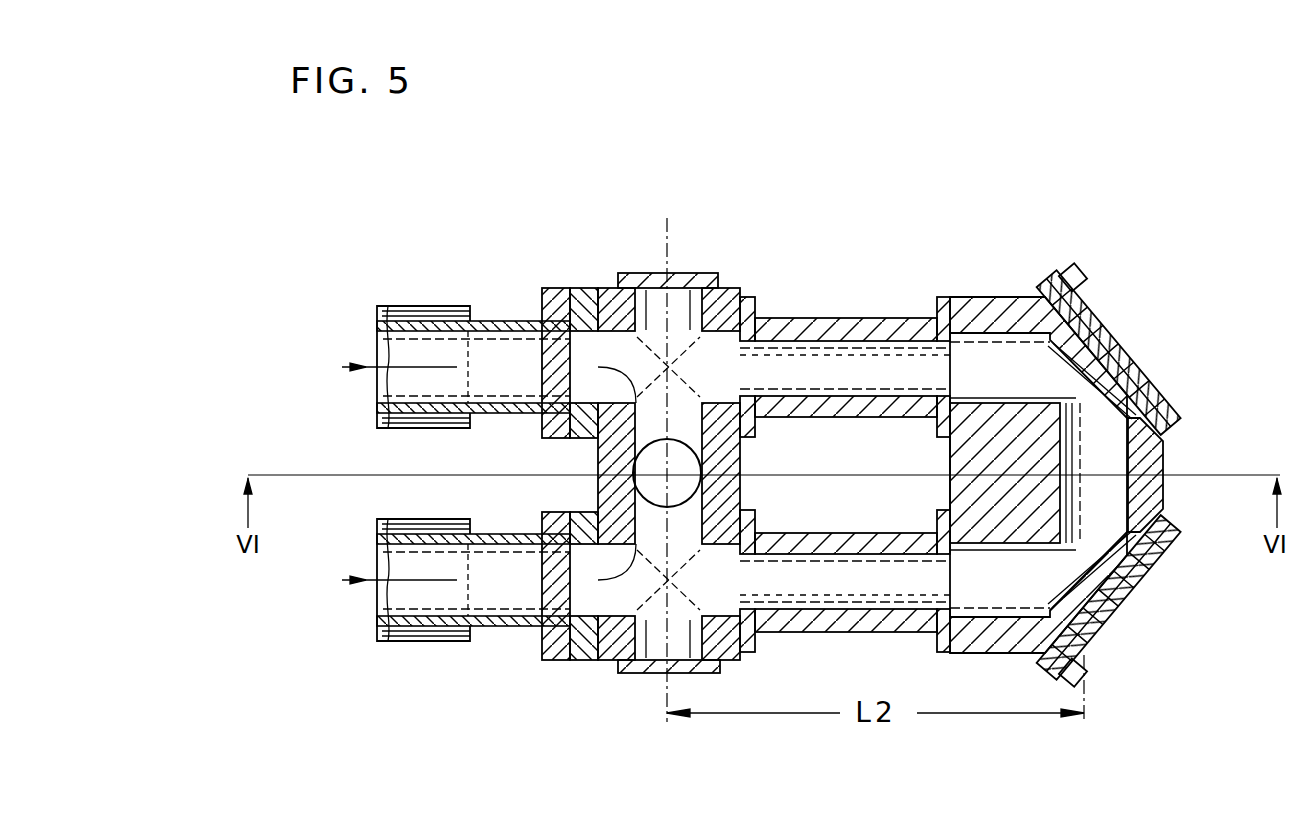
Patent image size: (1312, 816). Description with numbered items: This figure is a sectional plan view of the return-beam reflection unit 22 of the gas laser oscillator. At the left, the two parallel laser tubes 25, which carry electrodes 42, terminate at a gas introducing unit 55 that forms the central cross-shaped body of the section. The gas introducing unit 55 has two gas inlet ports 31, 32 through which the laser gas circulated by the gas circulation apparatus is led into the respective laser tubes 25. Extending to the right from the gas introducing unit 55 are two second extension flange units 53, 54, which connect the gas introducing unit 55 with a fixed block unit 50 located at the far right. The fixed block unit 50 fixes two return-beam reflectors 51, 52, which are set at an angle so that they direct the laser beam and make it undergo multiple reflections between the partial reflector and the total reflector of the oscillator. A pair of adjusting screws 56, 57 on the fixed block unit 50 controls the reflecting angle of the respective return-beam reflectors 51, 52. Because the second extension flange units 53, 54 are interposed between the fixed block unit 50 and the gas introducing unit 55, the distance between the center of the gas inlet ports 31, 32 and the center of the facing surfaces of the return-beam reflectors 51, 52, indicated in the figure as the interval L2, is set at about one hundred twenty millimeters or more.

The return-beam reflection unit 22 is at (795, 273).
The laser tube 25 is at (500, 319).
The gas inlet port 31 is at (640, 673).
The gas inlet port 32 is at (685, 402).
The electrode 42 is at (382, 421).
The fixed block unit 50 is at (1155, 485).
The return-beam reflector 51 is at (1145, 572).
The return-beam reflector 52 is at (1023, 347).
The second extension flange unit 53 is at (790, 641).
The second extension flange unit 54 is at (852, 318).
The gas introducing unit 55 is at (606, 662).
The adjusting screw 56 is at (1070, 673).
The adjusting screw 57 is at (1050, 277).